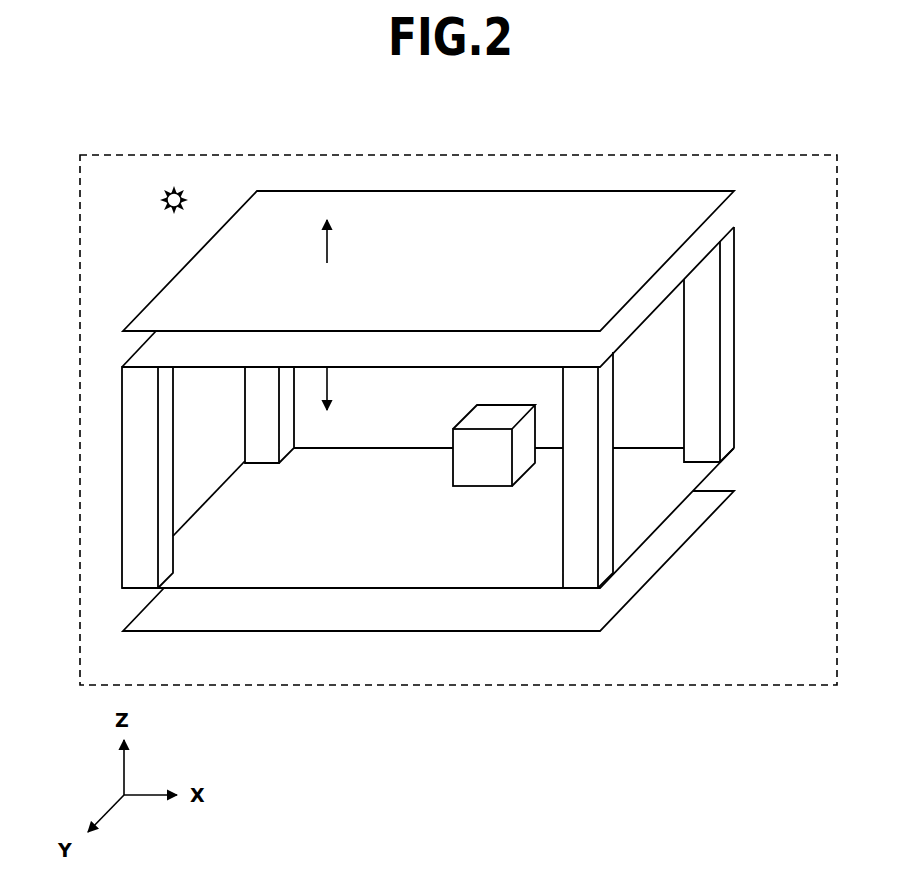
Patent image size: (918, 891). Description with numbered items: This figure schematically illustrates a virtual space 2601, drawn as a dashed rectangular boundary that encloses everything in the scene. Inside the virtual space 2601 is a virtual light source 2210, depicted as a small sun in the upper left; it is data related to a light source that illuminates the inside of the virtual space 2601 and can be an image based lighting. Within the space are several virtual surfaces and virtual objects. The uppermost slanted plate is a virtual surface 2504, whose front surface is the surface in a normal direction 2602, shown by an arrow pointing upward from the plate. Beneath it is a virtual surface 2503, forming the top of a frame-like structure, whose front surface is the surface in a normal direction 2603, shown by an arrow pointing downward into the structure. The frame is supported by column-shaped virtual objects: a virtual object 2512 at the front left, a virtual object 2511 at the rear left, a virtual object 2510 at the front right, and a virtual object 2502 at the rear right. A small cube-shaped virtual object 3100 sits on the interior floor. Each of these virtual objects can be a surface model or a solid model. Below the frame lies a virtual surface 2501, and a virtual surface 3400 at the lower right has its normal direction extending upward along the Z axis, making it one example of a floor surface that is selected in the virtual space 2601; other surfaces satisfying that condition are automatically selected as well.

The virtual light source 2210 is at (164, 213).
The virtual surface 2504 is at (703, 204).
The virtual surface 2503 is at (703, 240).
The virtual object 2502 is at (727, 375).
The virtual object 2510 is at (571, 532).
The virtual object 2511 is at (266, 452).
The virtual object 2512 is at (167, 552).
The virtual surface 2501 is at (653, 557).
The virtual object 3100 is at (474, 414).
The virtual surface 3400 is at (652, 507).
The virtual space 2601 is at (672, 687).
The normal direction 2602 is at (327, 245).
The normal direction 2603 is at (327, 385).